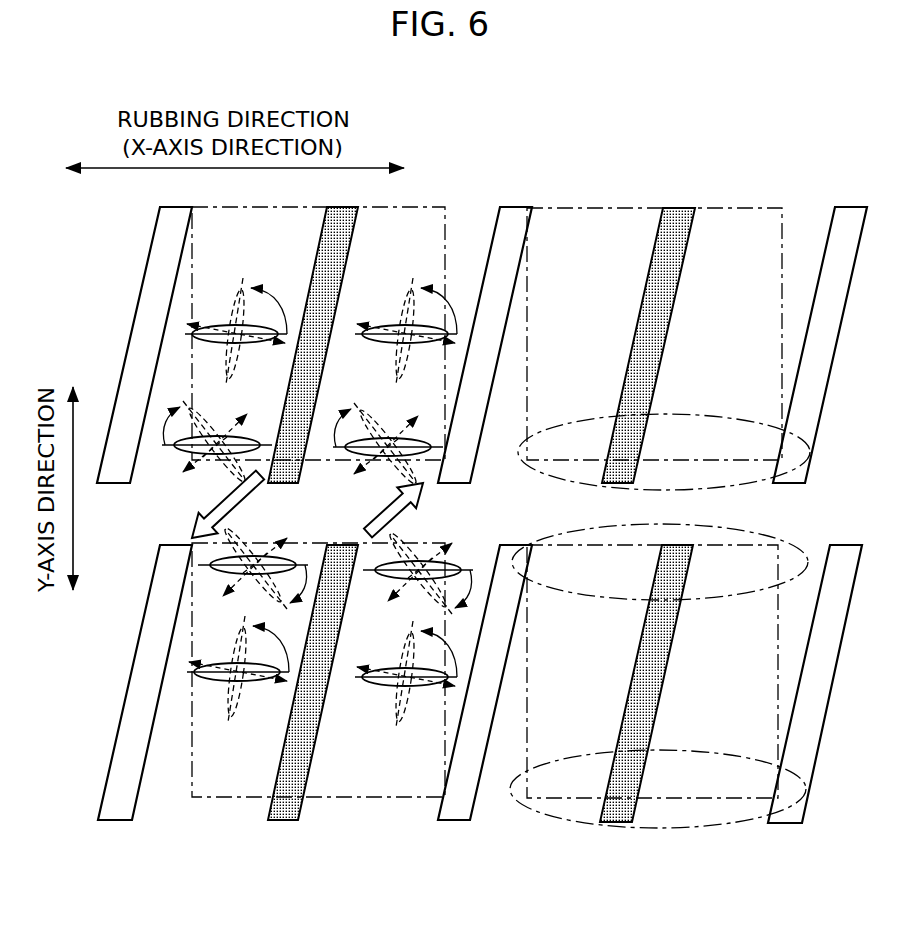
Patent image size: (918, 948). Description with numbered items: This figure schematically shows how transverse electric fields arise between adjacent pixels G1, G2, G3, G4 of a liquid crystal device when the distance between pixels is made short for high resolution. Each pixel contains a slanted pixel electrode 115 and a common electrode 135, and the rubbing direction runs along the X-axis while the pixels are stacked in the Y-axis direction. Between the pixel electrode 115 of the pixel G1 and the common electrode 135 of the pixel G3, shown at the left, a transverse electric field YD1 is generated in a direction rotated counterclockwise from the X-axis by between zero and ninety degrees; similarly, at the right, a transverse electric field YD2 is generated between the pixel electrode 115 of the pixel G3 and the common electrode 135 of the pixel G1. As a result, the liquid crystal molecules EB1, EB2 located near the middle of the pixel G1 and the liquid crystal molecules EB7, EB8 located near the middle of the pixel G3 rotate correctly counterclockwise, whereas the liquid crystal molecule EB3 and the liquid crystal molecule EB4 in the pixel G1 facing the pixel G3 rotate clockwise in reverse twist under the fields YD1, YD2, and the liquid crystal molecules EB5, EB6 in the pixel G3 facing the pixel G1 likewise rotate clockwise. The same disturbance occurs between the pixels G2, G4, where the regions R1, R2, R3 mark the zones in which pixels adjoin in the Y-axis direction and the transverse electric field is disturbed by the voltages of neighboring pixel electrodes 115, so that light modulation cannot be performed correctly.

The common electrode 135 is at (167, 250).
The pixel electrode 115 is at (330, 250).
The liquid crystal molecule EB1 is at (227, 318).
The liquid crystal molecule EB2 is at (388, 318).
The liquid crystal molecule EB3 is at (252, 438).
The liquid crystal molecule EB4 is at (424, 438).
The liquid crystal molecule EB5 is at (298, 562).
The liquid crystal molecule EB6 is at (458, 560).
The liquid crystal molecule EB7 is at (212, 700).
The liquid crystal molecule EB8 is at (380, 695).
The region R1 is at (718, 413).
The region R2 is at (722, 600).
The region R3 is at (725, 828).
The pixel G1 is at (415, 207).
The pixel G2 is at (728, 207).
The pixel G3 is at (372, 800).
The pixel G4 is at (550, 800).
The transverse electric field YD1 is at (211, 504).
The transverse electric field YD2 is at (419, 510).